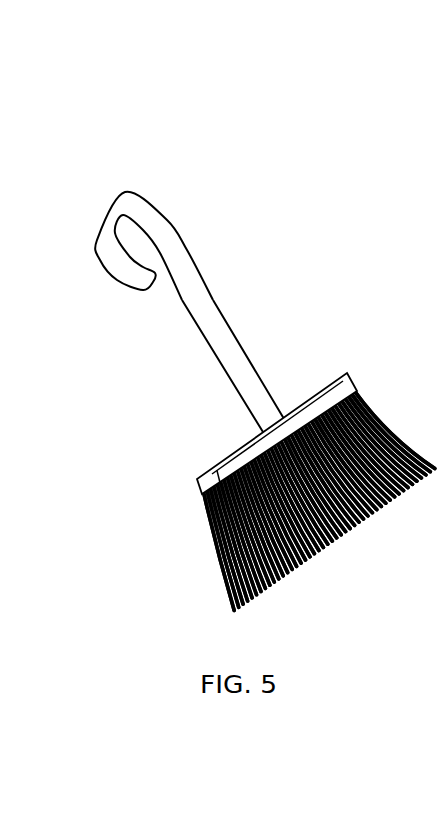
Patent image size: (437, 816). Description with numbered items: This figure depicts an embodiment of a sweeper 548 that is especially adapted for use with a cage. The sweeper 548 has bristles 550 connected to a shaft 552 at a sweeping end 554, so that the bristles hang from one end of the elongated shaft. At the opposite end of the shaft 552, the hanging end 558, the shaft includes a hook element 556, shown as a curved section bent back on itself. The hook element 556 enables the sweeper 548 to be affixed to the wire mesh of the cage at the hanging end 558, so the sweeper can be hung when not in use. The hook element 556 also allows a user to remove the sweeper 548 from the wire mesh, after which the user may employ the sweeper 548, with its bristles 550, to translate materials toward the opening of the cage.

The sweeper 548 is at (286, 84).
The bristles 550 is at (237, 577).
The shaft 552 is at (223, 352).
The sweeping end 554 is at (362, 561).
The hook element 556 is at (107, 222).
The hanging end 558 is at (102, 163).